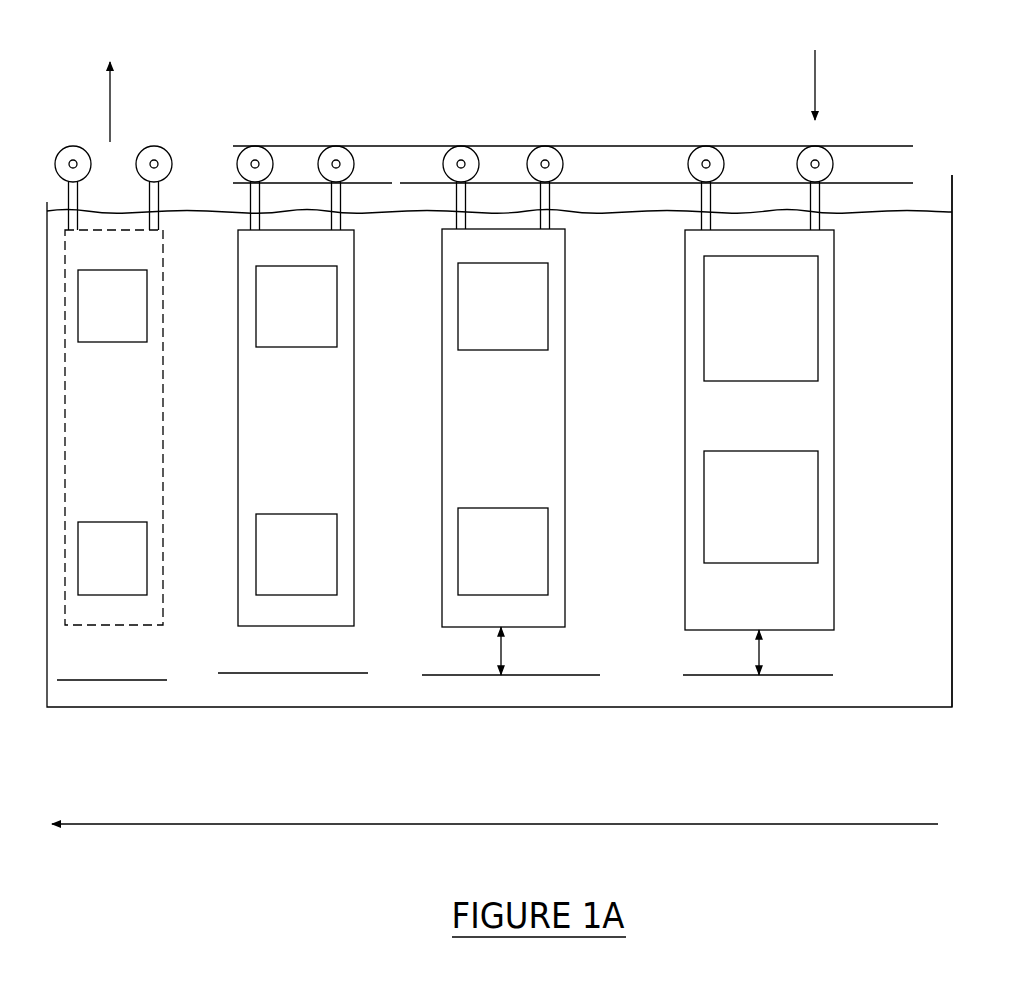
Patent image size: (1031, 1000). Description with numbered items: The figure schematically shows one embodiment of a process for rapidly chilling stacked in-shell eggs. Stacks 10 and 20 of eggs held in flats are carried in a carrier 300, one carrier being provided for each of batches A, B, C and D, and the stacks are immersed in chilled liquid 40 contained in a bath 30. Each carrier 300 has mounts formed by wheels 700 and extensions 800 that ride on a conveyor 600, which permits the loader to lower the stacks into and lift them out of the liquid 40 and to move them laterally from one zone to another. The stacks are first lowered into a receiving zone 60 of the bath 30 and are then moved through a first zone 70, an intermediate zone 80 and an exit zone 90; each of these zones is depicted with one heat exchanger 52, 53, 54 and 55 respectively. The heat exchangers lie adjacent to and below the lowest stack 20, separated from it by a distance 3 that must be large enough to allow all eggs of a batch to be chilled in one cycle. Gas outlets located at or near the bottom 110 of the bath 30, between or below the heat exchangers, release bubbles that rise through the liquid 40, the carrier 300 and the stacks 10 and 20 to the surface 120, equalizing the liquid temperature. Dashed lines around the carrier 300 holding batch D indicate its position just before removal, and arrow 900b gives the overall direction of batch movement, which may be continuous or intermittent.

The stack 10 is at (795, 305).
The stack 20 is at (792, 548).
The bath 30 is at (952, 312).
The liquid 40 is at (933, 408).
The heat exchanger 52 is at (822, 672).
The heat exchanger 53 is at (550, 675).
The heat exchanger 54 is at (333, 673).
The heat exchanger 55 is at (158, 680).
The receiving zone 60 is at (800, 500).
The first zone 70 is at (419, 722).
The intermediate zone 80 is at (218, 722).
The exit zone 90 is at (172, 722).
The bottom 110 is at (935, 707).
The surface 120 is at (930, 213).
The carrier 300 is at (835, 394).
The conveyor 600 is at (893, 178).
The wheels 700 is at (803, 158).
The extensions 800 is at (700, 195).
The arrow 900b is at (495, 837).
The distance 3 is at (639, 651).